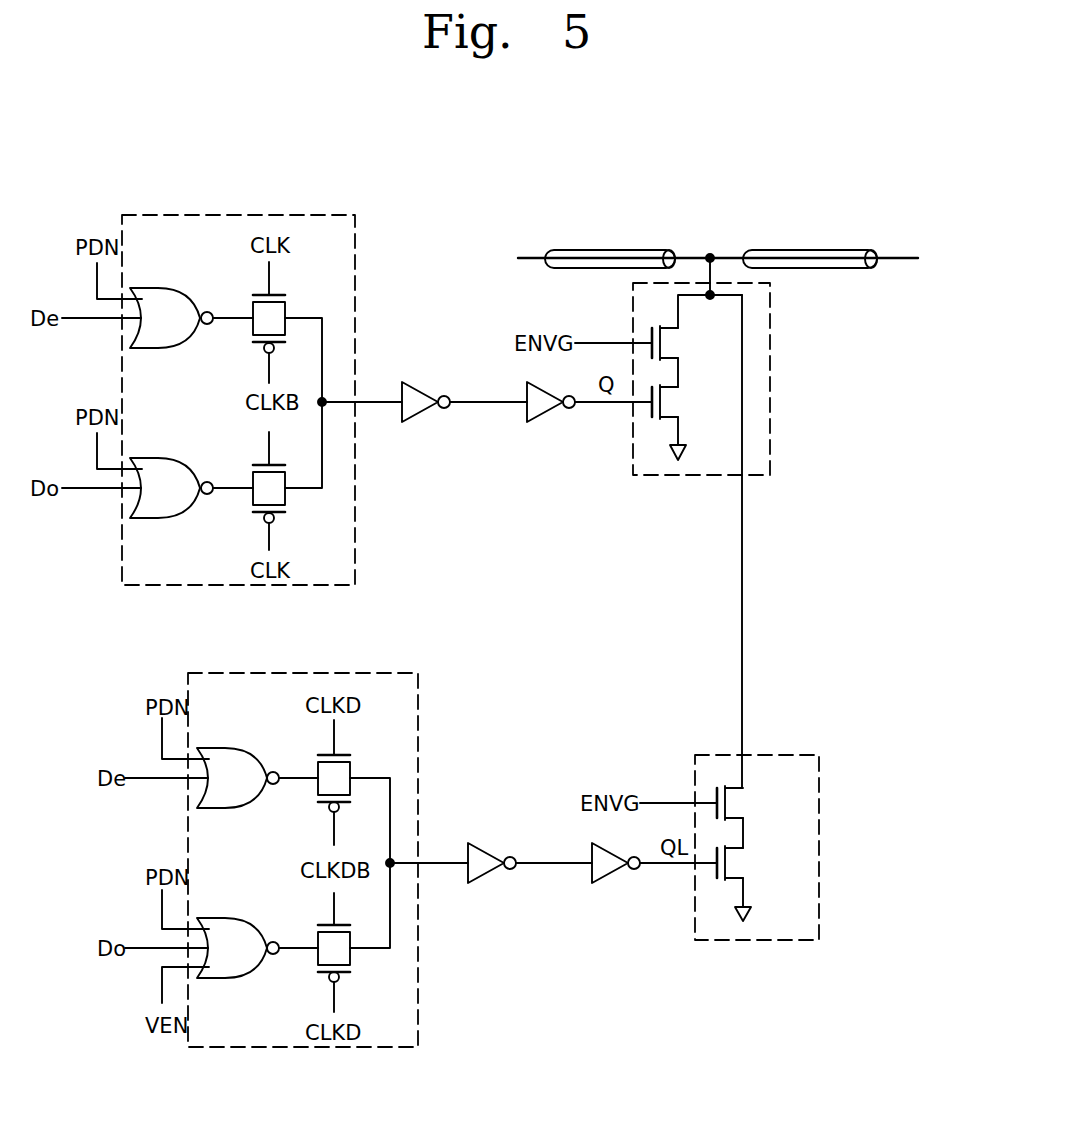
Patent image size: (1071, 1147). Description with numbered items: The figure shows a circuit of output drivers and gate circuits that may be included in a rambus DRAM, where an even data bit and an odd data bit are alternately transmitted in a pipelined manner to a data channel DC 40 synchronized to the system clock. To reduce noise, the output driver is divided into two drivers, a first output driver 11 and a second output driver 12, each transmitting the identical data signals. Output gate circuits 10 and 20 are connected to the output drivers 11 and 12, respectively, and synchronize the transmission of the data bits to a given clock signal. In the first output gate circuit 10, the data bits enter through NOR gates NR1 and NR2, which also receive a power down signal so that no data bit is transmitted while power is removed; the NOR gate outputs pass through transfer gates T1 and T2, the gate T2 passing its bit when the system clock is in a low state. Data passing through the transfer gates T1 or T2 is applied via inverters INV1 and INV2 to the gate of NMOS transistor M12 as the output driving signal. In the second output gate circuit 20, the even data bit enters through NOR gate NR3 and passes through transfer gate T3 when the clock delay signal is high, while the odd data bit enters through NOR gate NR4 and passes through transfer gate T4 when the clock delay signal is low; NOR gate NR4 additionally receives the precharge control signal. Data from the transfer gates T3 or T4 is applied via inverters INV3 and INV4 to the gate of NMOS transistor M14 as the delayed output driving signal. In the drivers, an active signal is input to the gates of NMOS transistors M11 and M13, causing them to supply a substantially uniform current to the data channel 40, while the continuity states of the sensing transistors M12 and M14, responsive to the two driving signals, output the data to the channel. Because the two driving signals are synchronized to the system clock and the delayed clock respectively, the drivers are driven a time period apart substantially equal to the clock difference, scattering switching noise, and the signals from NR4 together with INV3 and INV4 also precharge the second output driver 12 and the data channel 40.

The output gate circuit 10 is at (355, 259).
The first output driver 11 is at (771, 377).
The second output driver 12 is at (820, 850).
The output gate circuit 20 is at (418, 720).
The data channel 40 is at (893, 263).
The data channel DC is at (910, 258).
The NOR gate NR1 is at (143, 290).
The NOR gate NR2 is at (143, 460).
The NOR gate NR3 is at (210, 750).
The NOR gate NR4 is at (210, 920).
The transfer gate T1 is at (285, 312).
The transmit gate T2 is at (288, 497).
The transfer gate T3 is at (350, 770).
The transfer gate T4 is at (352, 957).
The inverter INV1 is at (422, 420).
The inverter INV2 is at (547, 420).
The inverter INV3 is at (488, 881).
The inverter INV4 is at (612, 881).
The NMOS transistor M11 is at (691, 343).
The NMOS transistor M12 is at (691, 402).
The NMOS transistor M13 is at (757, 803).
The NMOS transistor M14 is at (757, 863).